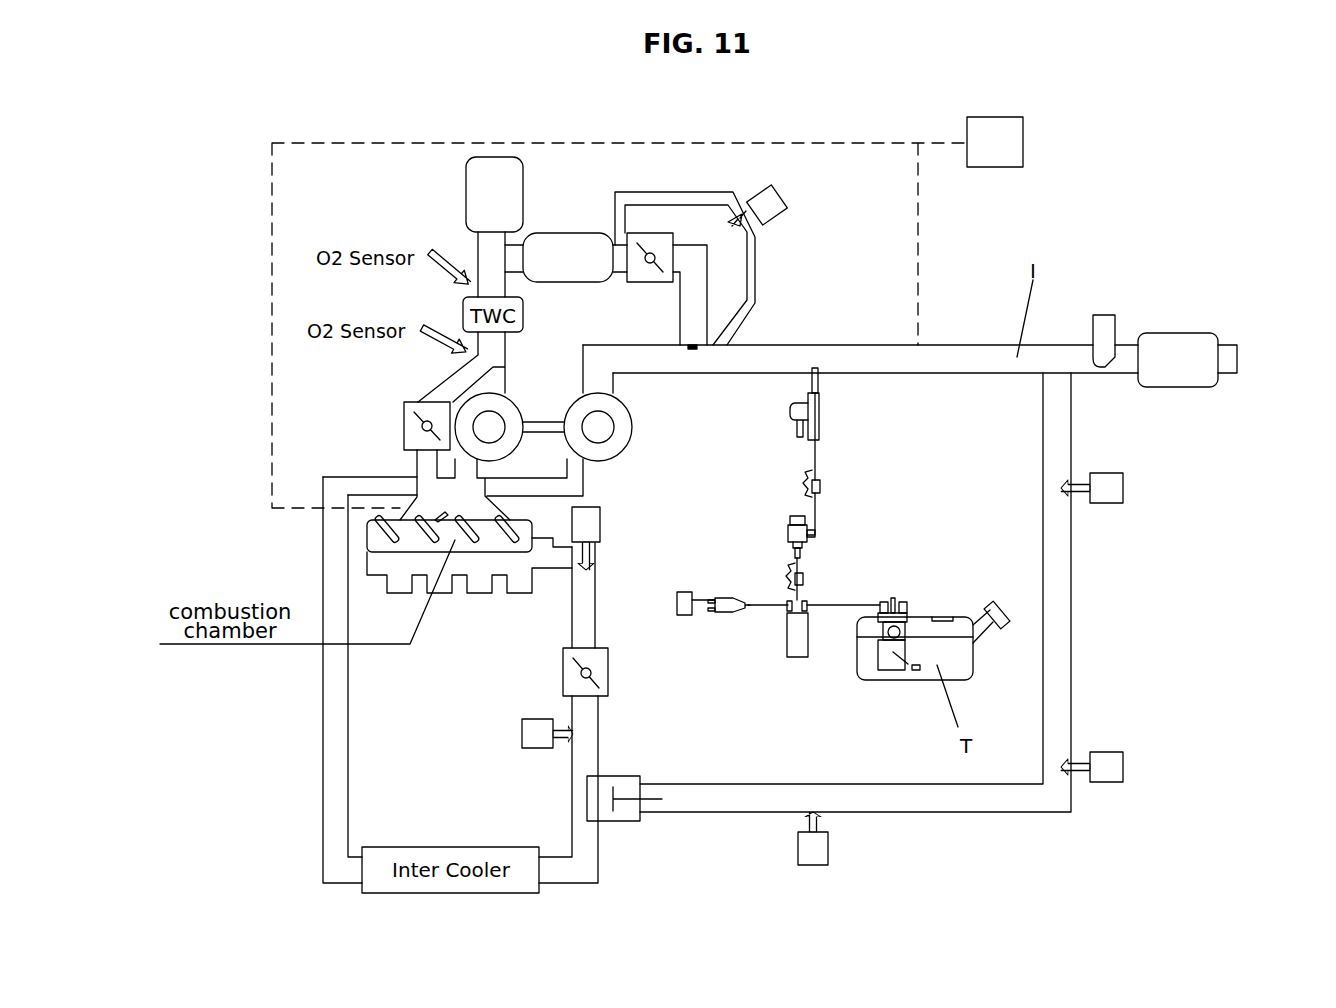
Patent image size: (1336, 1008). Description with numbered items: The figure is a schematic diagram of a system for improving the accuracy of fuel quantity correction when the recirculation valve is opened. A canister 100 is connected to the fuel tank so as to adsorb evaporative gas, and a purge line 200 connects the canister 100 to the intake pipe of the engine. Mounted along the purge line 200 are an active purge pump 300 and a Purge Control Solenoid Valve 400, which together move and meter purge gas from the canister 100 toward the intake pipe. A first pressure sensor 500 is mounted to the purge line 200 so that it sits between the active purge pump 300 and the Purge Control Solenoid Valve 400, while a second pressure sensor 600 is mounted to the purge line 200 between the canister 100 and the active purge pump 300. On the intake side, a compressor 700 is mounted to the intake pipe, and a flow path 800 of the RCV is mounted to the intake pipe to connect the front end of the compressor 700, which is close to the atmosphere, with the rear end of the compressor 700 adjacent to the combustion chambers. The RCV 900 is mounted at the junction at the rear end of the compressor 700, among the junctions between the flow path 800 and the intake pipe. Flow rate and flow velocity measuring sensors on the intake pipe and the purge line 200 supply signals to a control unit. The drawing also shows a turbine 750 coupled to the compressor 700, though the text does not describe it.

The canister 100 is at (797, 645).
The purge line 200 is at (815, 525).
The active purge pump 300 is at (790, 535).
The Purge Control Solenoid Valve (PCSV) 400 is at (812, 412).
The first pressure sensor 500 is at (819, 485).
The second pressure sensor 600 is at (803, 578).
The compressor 700 is at (622, 452).
The turbocharger turbine 750 is at (518, 405).
The flow path of the RCV 800 is at (1057, 655).
The RCV 900 is at (620, 821).